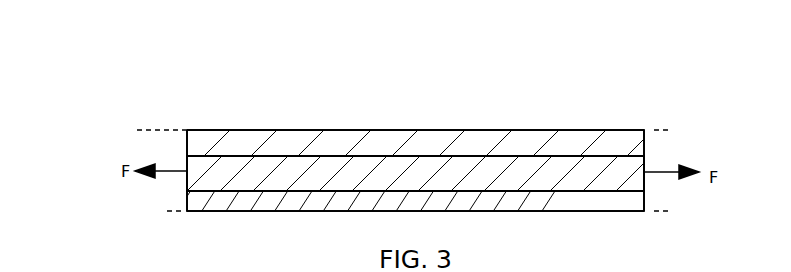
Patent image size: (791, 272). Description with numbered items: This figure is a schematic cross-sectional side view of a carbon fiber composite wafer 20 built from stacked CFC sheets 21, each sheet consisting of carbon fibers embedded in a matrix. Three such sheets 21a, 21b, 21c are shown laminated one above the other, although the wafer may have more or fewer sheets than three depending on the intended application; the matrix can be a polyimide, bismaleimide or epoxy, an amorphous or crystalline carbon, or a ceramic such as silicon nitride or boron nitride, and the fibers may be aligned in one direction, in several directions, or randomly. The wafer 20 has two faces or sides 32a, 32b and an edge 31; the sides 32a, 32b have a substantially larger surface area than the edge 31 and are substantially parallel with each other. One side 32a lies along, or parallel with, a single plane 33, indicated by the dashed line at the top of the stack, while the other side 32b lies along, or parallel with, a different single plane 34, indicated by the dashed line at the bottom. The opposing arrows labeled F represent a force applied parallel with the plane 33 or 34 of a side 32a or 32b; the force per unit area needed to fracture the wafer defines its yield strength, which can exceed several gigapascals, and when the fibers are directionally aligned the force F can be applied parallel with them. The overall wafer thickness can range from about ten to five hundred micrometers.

The carbon fiber composite wafer 20 is at (364, 78).
The CFC sheet 21 is at (358, 158).
The first CFC sheet 21a is at (389, 142).
The second CFC sheet 21b is at (431, 167).
The third CFC sheet 21c is at (260, 202).
The edge 31 is at (650, 147).
The first side 32a is at (585, 128).
The second side 32b is at (579, 213).
The plane 33 is at (390, 132).
The plane 34 is at (430, 212).